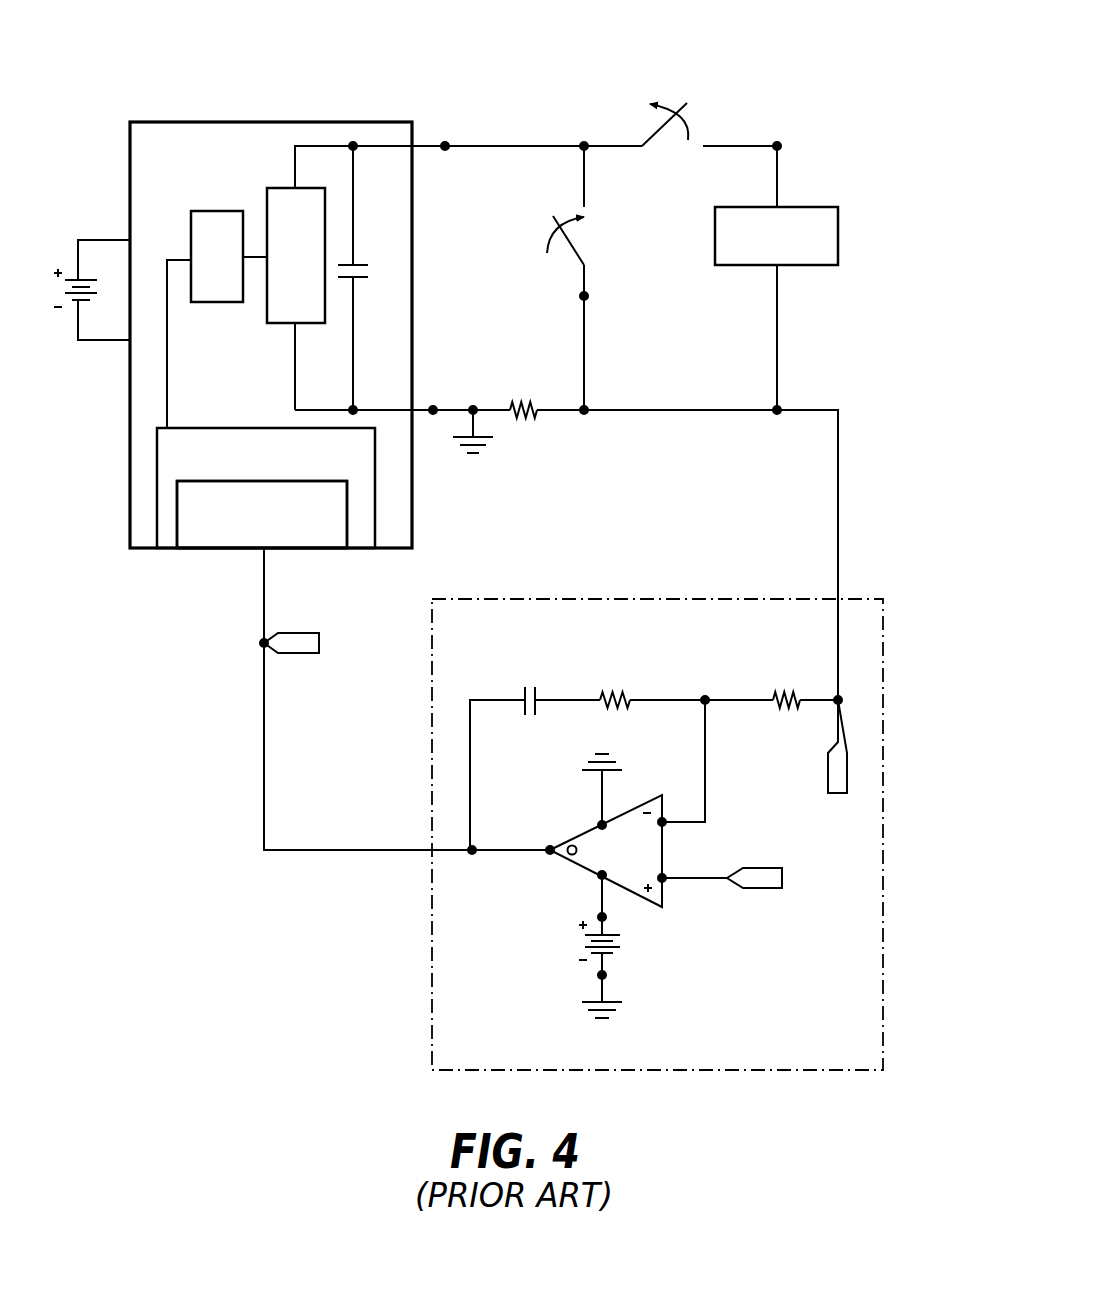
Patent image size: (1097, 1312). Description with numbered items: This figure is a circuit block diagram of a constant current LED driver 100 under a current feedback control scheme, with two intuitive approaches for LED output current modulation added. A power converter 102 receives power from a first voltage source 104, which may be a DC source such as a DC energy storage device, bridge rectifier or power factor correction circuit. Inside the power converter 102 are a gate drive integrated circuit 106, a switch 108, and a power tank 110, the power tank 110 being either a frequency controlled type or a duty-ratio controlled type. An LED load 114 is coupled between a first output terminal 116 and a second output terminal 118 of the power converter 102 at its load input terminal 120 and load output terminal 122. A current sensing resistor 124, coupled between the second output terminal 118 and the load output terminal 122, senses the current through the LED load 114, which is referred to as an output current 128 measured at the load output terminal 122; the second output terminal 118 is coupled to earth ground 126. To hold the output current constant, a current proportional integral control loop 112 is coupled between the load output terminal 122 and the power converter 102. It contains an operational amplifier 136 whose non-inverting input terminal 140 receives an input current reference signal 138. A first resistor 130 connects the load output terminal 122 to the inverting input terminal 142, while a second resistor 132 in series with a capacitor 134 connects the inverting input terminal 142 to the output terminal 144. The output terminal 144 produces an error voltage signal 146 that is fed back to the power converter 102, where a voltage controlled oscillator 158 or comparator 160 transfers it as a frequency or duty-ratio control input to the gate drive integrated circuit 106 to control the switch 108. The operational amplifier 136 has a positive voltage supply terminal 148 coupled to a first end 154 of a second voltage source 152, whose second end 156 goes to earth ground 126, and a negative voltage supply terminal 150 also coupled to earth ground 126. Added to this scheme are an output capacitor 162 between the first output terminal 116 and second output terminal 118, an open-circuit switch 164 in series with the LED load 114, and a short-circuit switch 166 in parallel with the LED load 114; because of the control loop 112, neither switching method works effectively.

The constant current LED driver 100 is at (878, 67).
The power converter 102 is at (270, 119).
The first voltage source 104 is at (72, 279).
The gate drive integrated circuit 106 is at (281, 470).
The switch 108 is at (235, 274).
The power tank 110 is at (314, 271).
The current proportional integral control loop 112 is at (879, 596).
The LED load 114 is at (795, 250).
The first output terminal 116 is at (445, 145).
The second output terminal 118 is at (433, 408).
The load input terminal 120 is at (777, 145).
The load output terminal 122 is at (780, 408).
The current sensing resistor 124 is at (535, 405).
The earth ground 126 is at (483, 458).
The output current 128 is at (830, 770).
The first resistor 130 is at (795, 697).
The second resistor 132 is at (620, 697).
The capacitor 134 is at (522, 697).
The operational amplifier 136 is at (646, 861).
The input current reference signal 138 is at (765, 870).
The non-inverting input terminal 140 is at (665, 877).
The inverting input terminal 142 is at (664, 821).
The output terminal 144 is at (549, 852).
The error voltage signal 146 is at (305, 640).
The positive voltage supply terminal 148 is at (600, 877).
The negative voltage supply terminal 150 is at (600, 823).
The second voltage source 152 is at (600, 955).
The first end 154 is at (605, 917).
The second end 156 is at (605, 975).
The voltage controlled oscillator 158 is at (304, 530).
The comparator 160 is at (262, 514).
The output capacitor 162 is at (363, 265).
The open-circuit switch 164 is at (687, 103).
The short-circuit switch 166 is at (584, 262).